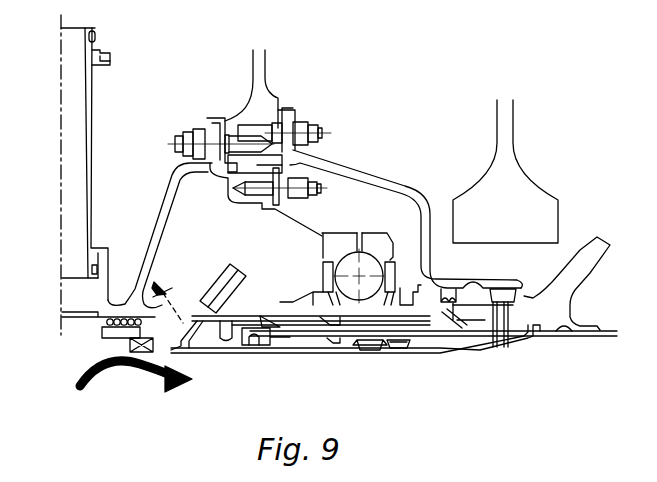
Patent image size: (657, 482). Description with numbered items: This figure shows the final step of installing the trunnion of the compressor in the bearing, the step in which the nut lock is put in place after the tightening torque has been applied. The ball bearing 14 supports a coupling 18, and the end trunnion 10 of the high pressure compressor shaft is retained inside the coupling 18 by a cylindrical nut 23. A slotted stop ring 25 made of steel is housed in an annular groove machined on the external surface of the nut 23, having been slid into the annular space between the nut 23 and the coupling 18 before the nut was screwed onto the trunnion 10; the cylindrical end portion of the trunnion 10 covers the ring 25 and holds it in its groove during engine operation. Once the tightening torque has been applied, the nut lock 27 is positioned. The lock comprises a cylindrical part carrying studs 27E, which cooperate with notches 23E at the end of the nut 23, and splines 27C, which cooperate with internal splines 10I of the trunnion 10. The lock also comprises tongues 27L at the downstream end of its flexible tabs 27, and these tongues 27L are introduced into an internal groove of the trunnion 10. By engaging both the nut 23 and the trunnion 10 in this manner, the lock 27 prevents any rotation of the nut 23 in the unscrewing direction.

The ball bearing 14 is at (370, 215).
The coupling 18 is at (292, 305).
The slotted stop ring 25 is at (243, 352).
The cylindrical nut 23 is at (270, 345).
The end trunnion 10 is at (298, 333).
The notches 23E is at (363, 348).
The studs 27E is at (357, 344).
The internal splines 10I is at (461, 387).
The splines 27C is at (398, 344).
The nut lock 27 is at (466, 353).
The tongues 27L is at (523, 340).